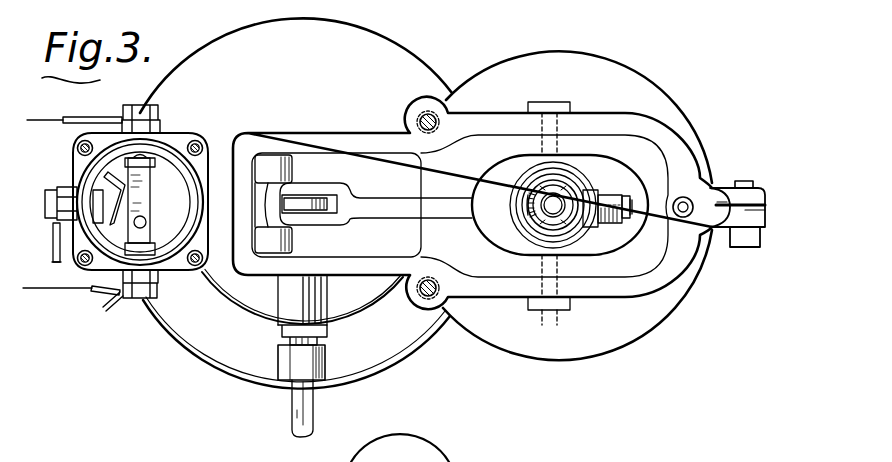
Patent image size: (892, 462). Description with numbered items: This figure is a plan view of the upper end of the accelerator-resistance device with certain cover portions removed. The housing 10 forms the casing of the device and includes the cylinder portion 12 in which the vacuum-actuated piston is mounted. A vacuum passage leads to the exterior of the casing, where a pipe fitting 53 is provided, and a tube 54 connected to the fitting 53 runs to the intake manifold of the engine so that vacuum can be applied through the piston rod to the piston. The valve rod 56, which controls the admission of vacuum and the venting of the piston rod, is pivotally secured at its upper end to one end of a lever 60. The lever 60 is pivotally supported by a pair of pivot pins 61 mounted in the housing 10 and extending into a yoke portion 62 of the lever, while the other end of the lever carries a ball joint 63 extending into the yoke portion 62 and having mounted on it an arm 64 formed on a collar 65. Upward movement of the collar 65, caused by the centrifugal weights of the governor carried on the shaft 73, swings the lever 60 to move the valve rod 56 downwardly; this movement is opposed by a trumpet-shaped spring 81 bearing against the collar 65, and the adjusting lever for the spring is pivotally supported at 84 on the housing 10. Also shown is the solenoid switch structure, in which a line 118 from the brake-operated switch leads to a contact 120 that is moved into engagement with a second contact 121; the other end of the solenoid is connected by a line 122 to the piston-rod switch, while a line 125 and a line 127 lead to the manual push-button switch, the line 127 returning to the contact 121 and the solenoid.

The housing 10 is at (600, 352).
The cylinder portion 12 is at (240, 352).
The pipe fitting 53 is at (325, 360).
The tube 54 is at (305, 413).
The valve rod 56 is at (323, 207).
The lever 60 is at (395, 203).
The pivot pins 61 is at (553, 103).
The yoke portion 62 is at (470, 165).
The ball joint 63 is at (622, 222).
The arm 64 is at (612, 225).
The collar 65 is at (556, 200).
The shaft 73 is at (575, 188).
The trumpet-shaped spring 81 is at (527, 207).
The pivot of adjusting lever 84 is at (272, 158).
The line 118 is at (98, 313).
The contact 120 is at (147, 232).
The contact 121 is at (146, 190).
The line 122 is at (58, 326).
The line 125 is at (42, 290).
The line 127 is at (40, 121).